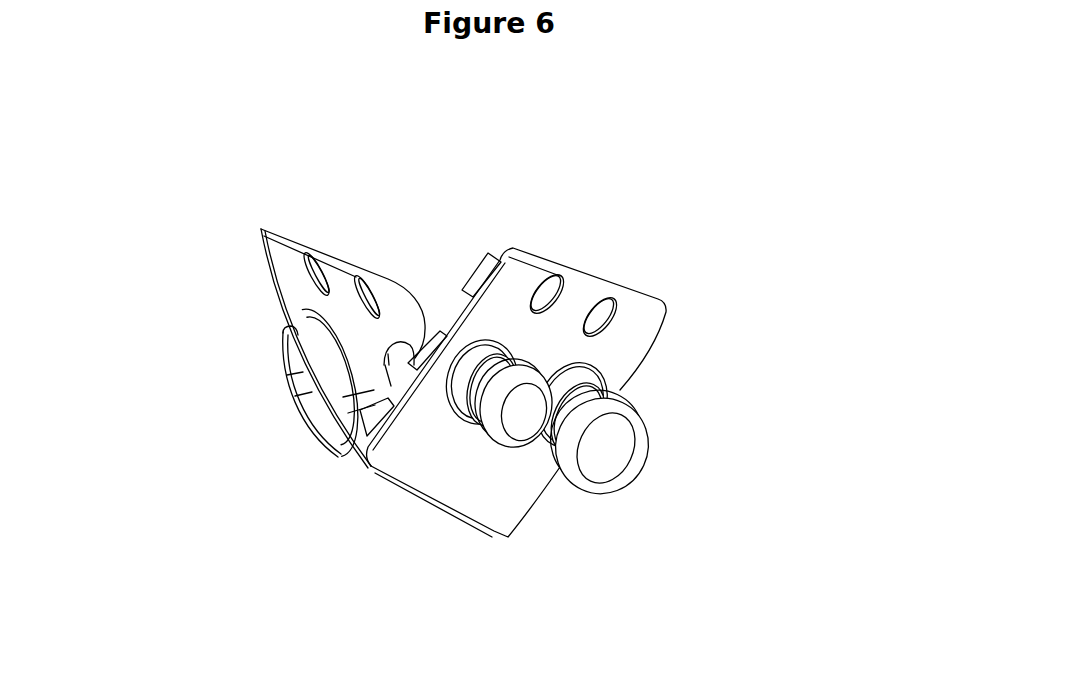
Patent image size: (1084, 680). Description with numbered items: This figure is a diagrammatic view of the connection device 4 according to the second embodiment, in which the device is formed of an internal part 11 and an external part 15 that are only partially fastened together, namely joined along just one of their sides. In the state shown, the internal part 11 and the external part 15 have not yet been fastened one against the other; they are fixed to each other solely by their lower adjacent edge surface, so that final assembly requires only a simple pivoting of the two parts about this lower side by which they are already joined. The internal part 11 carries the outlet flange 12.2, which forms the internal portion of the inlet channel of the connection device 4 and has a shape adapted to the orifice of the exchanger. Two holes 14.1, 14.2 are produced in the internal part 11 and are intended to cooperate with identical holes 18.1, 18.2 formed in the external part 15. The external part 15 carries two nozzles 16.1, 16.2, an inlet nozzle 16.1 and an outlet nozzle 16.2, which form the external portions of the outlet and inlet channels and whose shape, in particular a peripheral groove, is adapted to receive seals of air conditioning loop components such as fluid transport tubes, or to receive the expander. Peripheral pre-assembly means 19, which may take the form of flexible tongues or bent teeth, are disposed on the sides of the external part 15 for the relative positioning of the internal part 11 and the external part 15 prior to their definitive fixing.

The connection device 4 is at (388, 573).
The internal part 11 is at (314, 452).
The outlet flange 12.2 is at (307, 392).
The hole 14.1 is at (263, 228).
The hole 14.2 is at (358, 280).
The external part 15 is at (670, 298).
The inlet nozzle 16.1 is at (585, 437).
The outlet nozzle 16.2 is at (488, 427).
The hole 18.1 is at (546, 292).
The hole 18.2 is at (598, 312).
The pre-assembly means 19 is at (485, 272).